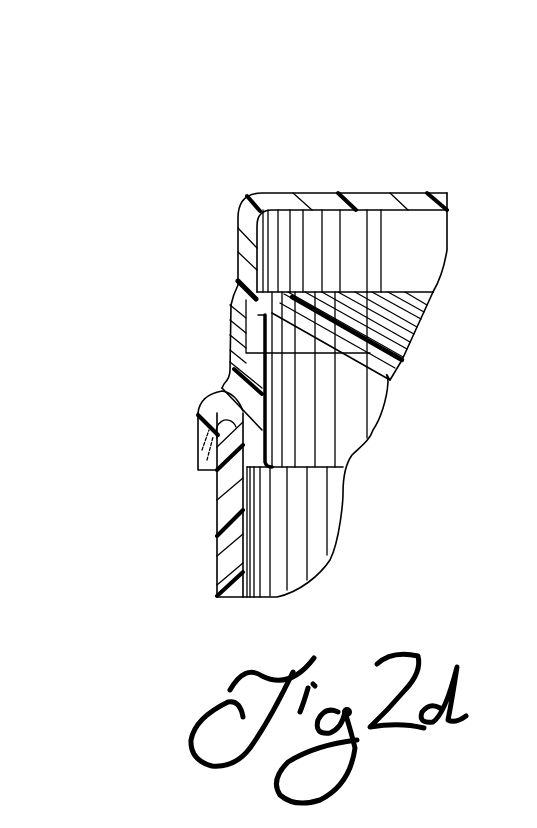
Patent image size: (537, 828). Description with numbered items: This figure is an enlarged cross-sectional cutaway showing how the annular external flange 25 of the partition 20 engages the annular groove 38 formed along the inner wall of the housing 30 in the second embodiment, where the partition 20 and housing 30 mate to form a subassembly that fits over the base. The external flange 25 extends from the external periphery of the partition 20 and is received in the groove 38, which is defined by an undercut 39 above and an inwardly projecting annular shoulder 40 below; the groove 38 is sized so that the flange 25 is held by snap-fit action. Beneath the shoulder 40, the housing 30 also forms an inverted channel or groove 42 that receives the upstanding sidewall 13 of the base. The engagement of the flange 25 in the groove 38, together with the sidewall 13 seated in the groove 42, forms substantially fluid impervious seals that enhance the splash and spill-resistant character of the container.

The upstanding sidewall 13 is at (233, 562).
The partition 20 is at (397, 362).
The external flange 25 is at (268, 293).
The housing 30 is at (416, 205).
The annular groove 38 is at (190, 320).
The undercut 39 is at (240, 279).
The inwardly projecting annular shoulder 40 is at (230, 377).
The inverted channel or groove 42 is at (200, 413).